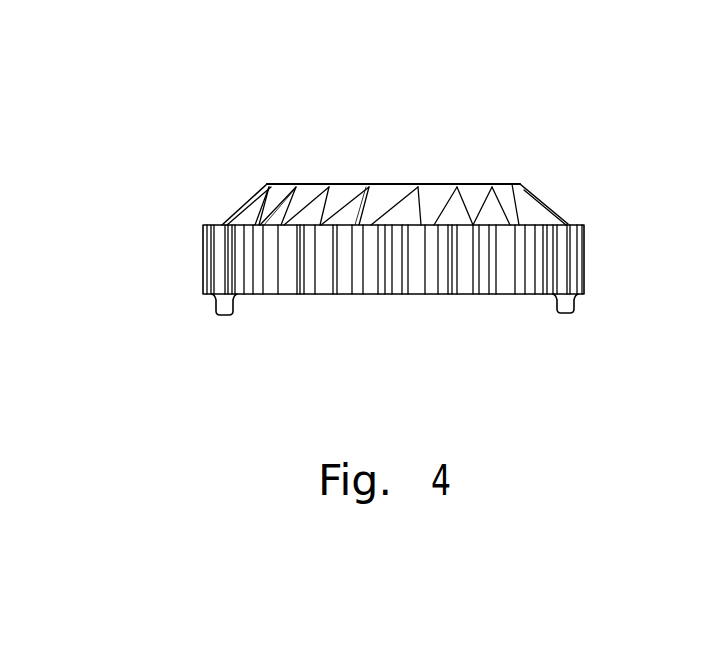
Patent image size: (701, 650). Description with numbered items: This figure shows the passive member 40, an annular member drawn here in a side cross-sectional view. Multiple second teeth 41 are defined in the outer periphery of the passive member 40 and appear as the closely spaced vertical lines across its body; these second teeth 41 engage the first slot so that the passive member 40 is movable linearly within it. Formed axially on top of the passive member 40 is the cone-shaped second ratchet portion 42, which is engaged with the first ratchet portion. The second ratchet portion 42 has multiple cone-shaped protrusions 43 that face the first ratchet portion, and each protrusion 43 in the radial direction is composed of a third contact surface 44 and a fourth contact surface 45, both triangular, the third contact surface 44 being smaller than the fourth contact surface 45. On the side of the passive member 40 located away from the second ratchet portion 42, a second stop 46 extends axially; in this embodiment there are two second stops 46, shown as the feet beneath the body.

The passive member 40 is at (222, 136).
The second teeth 41 is at (573, 262).
The second ratchet portion 42 is at (500, 163).
The protrusion 43 is at (345, 193).
The third contact surface 44 is at (378, 197).
The fourth contact surface 45 is at (352, 197).
The second stop 46 is at (568, 306).